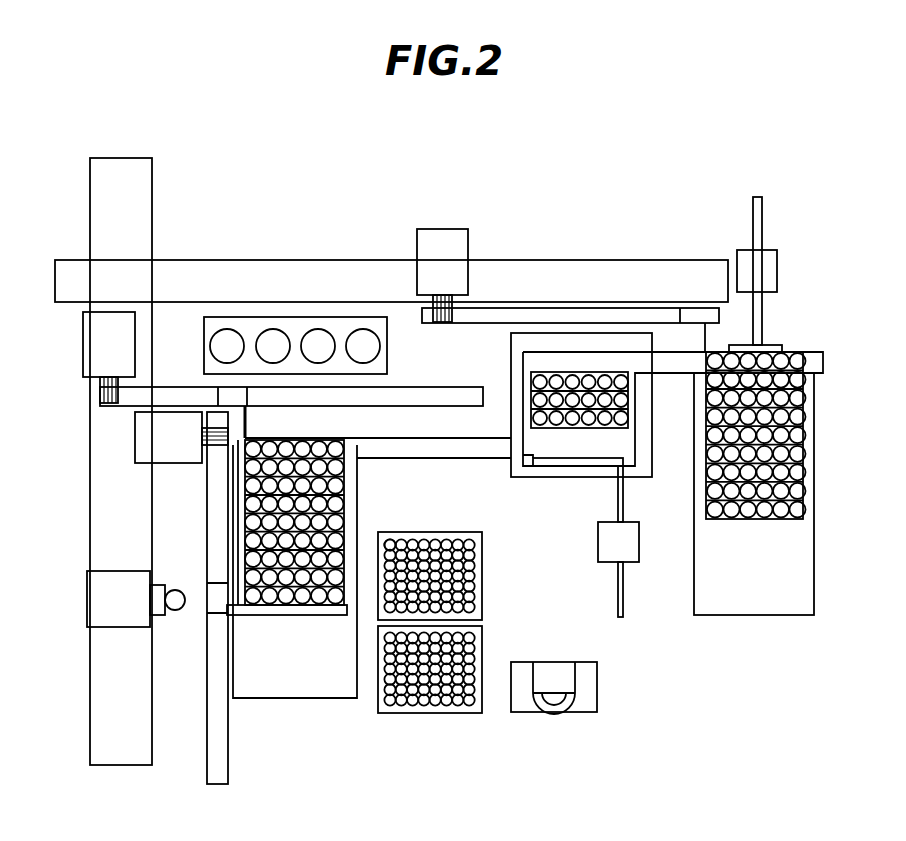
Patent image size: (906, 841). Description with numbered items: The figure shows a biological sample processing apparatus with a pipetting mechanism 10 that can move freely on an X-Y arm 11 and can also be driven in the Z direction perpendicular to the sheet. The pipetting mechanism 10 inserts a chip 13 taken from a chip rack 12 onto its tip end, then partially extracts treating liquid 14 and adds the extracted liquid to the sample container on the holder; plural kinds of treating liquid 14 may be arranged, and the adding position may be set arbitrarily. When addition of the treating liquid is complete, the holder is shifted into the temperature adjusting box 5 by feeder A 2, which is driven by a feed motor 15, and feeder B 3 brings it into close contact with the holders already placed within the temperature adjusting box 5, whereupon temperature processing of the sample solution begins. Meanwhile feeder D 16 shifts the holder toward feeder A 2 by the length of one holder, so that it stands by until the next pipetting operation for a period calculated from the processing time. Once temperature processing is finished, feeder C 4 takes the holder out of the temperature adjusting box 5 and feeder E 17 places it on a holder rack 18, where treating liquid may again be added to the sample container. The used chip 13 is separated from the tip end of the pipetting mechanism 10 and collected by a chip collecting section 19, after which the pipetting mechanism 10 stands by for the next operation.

The feeder A 2 is at (228, 397).
The feeder B 3 is at (578, 458).
The feeder C 4 is at (703, 316).
The temperature adjusting box 5 is at (532, 342).
The pipetting mechanism 10 is at (103, 599).
The X-Y arm 11 is at (133, 275).
The chip rack 12 is at (484, 575).
The chip 13 is at (390, 545).
The treating liquid 14 is at (223, 340).
The feed motor 15 is at (83, 338).
The feeder D 16 is at (135, 436).
The feeder E 17 is at (768, 343).
The holder rack 18 is at (752, 608).
The chip collecting section 19 is at (555, 667).